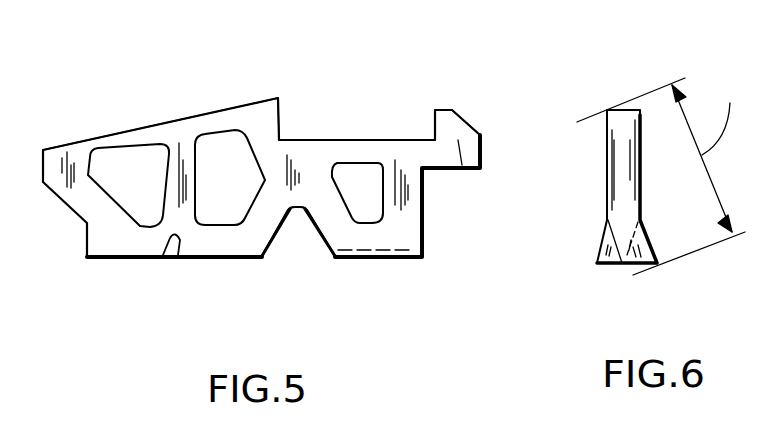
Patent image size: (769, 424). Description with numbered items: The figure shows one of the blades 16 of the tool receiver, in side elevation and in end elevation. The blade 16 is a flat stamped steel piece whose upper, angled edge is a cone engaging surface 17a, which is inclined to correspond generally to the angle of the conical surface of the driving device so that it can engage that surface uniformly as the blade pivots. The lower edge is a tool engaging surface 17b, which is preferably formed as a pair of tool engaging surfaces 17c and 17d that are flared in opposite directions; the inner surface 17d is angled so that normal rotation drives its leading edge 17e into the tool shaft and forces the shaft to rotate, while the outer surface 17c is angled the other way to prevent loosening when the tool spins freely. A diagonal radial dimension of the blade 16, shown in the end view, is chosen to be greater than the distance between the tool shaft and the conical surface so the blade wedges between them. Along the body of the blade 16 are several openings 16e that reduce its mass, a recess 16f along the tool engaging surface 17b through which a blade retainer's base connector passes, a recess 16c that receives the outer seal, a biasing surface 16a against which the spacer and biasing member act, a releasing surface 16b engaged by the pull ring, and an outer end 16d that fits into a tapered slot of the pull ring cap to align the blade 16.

In FIG. 5, the blade 16 is at (206, 47).
In FIG. 6, the blade 16 is at (618, 44).
In FIG. 5, the biasing surface 16a is at (280, 117).
In FIG. 5, the releasing surface 16b is at (435, 122).
In FIG. 5, the recess 16c is at (425, 173).
In FIG. 5, the outer end 16d is at (458, 140).
In FIG. 5, the openings 16e is at (118, 163).
In FIG. 5, the recess 16f is at (315, 230).
In FIG. 6, the cone engaging surface 17a is at (630, 100).
In FIG. 5, the tool engaging surface 17b is at (204, 273).
In FIG. 6, the tool engaging surface 17b is at (618, 270).
In FIG. 5, the tool engaging surface 17c is at (392, 260).
In FIG. 6, the tool engaging surface 17c is at (628, 267).
In FIG. 5, the tool engaging surface 17d is at (233, 107).
In FIG. 6, the tool engaging surface 17d is at (608, 267).
In FIG. 5, the leading edge 17e is at (176, 252).
In FIG. 6, the leading edge 17e is at (595, 262).